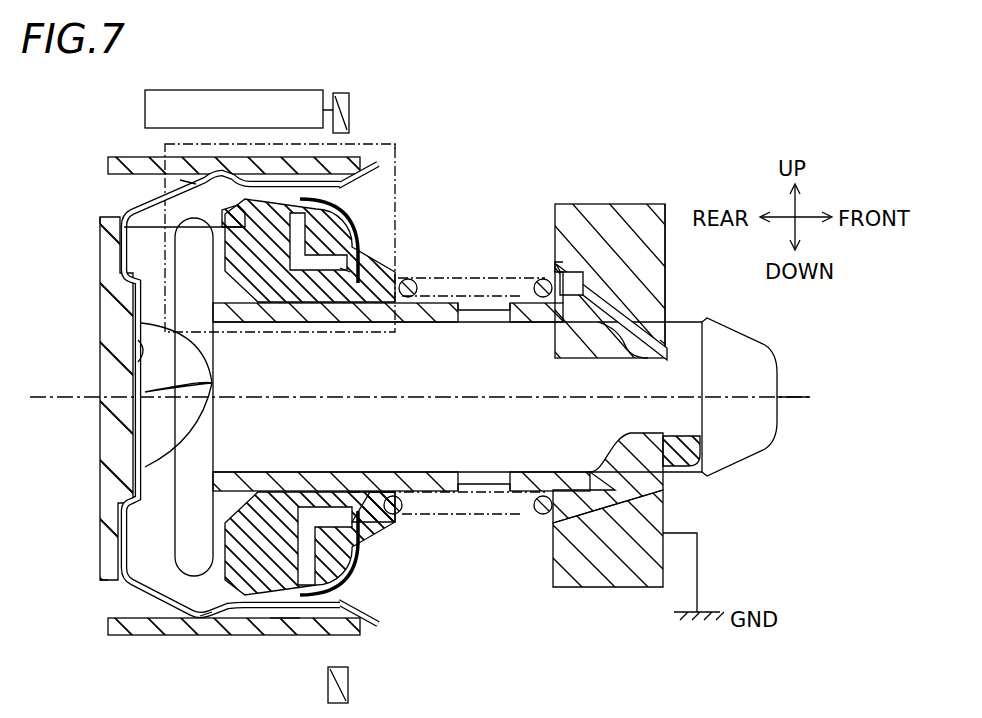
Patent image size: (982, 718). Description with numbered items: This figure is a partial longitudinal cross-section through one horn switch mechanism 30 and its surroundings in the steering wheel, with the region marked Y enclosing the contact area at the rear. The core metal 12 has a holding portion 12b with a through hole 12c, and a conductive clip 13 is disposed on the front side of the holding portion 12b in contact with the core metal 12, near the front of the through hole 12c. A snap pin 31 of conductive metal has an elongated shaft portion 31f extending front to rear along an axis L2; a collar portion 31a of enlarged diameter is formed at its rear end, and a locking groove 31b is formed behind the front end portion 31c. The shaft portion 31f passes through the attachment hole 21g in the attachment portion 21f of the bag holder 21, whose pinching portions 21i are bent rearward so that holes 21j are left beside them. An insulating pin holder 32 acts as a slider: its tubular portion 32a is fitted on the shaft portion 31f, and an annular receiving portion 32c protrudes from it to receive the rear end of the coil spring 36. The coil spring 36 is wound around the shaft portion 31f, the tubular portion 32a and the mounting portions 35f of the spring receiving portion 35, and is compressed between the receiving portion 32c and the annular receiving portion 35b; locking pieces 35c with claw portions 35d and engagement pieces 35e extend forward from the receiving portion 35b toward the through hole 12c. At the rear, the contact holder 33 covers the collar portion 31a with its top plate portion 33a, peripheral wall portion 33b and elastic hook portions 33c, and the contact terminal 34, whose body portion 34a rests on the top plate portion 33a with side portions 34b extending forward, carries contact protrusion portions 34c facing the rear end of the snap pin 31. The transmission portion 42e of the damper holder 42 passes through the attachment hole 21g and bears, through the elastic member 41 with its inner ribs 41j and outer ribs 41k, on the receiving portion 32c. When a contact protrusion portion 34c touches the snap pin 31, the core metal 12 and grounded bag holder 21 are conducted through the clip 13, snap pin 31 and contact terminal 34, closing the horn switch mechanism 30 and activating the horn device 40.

The core metal 12 is at (636, 376).
The holding portion 12b is at (603, 212).
The through hole 12c is at (605, 300).
The clip 13 is at (698, 468).
The bag holder 21 is at (350, 100).
The attachment portion 21f is at (345, 566).
The attachment hole 21g is at (362, 532).
The pinching portion 21i is at (285, 636).
The hole 21j is at (343, 135).
The horn switch mechanism 30 is at (75, 628).
The snap pin 31 is at (505, 401).
The collar portion 31a is at (212, 443).
The locking groove 31b is at (702, 362).
The front end portion 31c is at (775, 352).
The shaft portion 31f is at (536, 323).
The pin holder 32 is at (361, 397).
The tubular portion 32a is at (305, 325).
The receiving portion 32c is at (393, 323).
The contact holder 33 is at (239, 415).
The top plate portion 33a is at (110, 430).
The peripheral wall portion 33b is at (146, 638).
The hook portion 33c is at (385, 166).
The contact terminal 34 is at (126, 588).
The body portion 34a is at (136, 352).
The side portion 34b is at (178, 157).
The contact protrusion portion 34c is at (213, 383).
The spring receiving portion 35 is at (647, 368).
The receiving portion 35b is at (556, 262).
The locking piece 35c is at (590, 318).
The claw portion 35d is at (665, 340).
The engagement piece 35e is at (630, 492).
The mounting portion 35f is at (535, 474).
The coil spring 36 is at (538, 282).
The horn device 40 is at (145, 112).
The elastic member 41 is at (226, 218).
The inner rib 41j is at (345, 272).
The outer rib 41k is at (100, 221).
The damper holder 42 is at (346, 580).
The transmission portion 42e is at (358, 222).
The axis L2 is at (790, 402).
The region Y is at (398, 186).